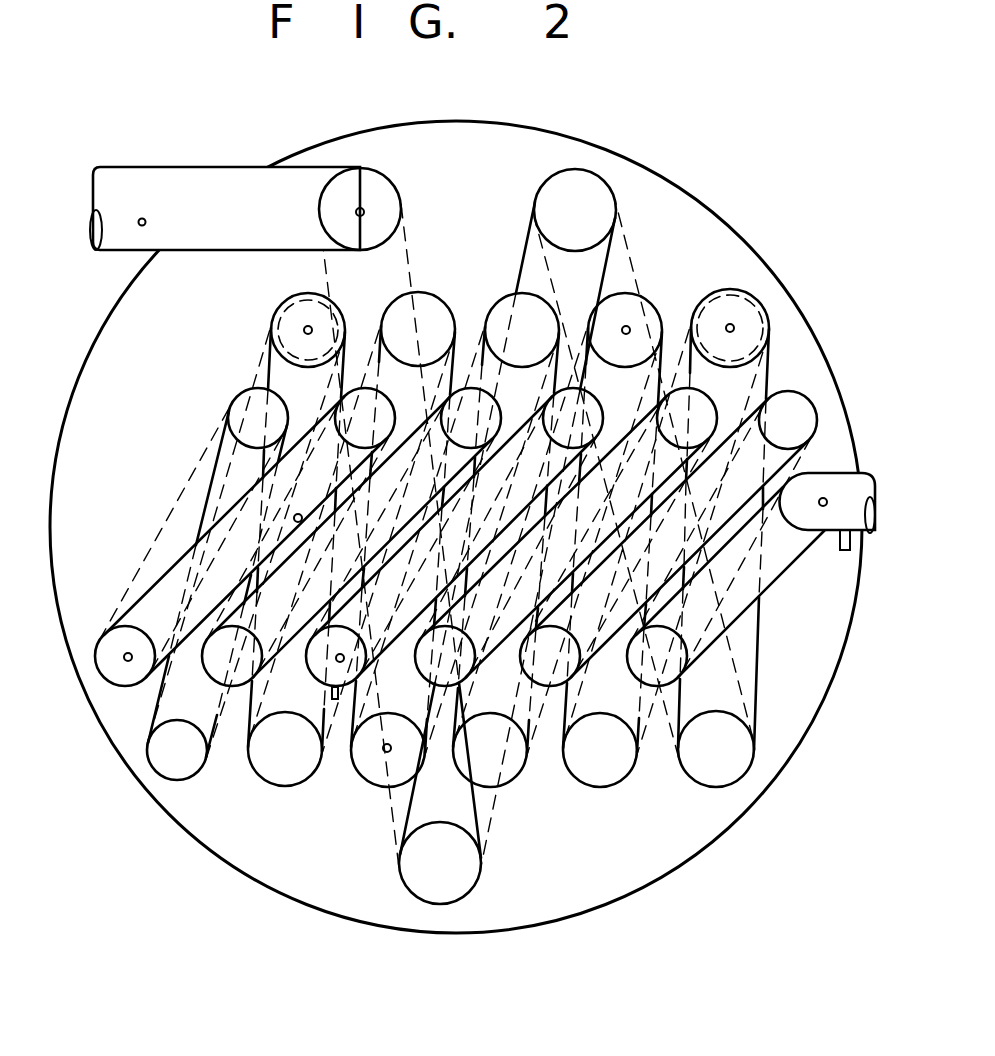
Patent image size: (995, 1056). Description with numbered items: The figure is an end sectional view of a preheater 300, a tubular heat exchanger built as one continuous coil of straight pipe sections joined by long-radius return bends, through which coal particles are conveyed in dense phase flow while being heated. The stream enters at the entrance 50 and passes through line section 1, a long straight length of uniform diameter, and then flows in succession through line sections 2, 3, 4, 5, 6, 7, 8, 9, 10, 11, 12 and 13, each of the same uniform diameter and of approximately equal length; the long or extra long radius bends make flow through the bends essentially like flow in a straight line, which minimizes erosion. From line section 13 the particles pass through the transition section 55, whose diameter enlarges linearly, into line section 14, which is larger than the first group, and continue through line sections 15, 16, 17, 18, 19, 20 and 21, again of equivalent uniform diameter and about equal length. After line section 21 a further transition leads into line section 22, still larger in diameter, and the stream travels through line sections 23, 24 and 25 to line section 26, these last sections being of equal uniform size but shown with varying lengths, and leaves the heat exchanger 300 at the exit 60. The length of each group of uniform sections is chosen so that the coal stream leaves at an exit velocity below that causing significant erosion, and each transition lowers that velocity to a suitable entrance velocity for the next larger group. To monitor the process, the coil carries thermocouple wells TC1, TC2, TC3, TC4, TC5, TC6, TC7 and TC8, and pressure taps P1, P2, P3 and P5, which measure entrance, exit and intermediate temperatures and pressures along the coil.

The line section 1 is at (657, 656).
The line section 2 is at (788, 420).
The line section 3 is at (550, 656).
The line section 4 is at (687, 418).
The line section 5 is at (445, 656).
The line section 6 is at (573, 418).
The line section 7 is at (336, 656).
The line section 8 is at (471, 418).
The line section 9 is at (232, 656).
The line section 10 is at (365, 418).
The line section 11 is at (125, 656).
The line section 12 is at (258, 418).
The line section 13 is at (177, 750).
The line section 14 is at (308, 330).
The line section 15 is at (285, 749).
The line section 16 is at (417, 329).
The line section 17 is at (388, 750).
The line section 18 is at (522, 330).
The line section 19 is at (490, 750).
The line section 20 is at (625, 330).
The line section 21 is at (600, 750).
The line section 22 is at (730, 328).
The line section 23 is at (716, 749).
The line section 24 is at (575, 210).
The line section 25 is at (440, 863).
The line section 26 is at (360, 209).
The entrance 50 is at (850, 503).
The transition section 55 is at (284, 308).
The exit 60 is at (93, 197).
The preheater 300 is at (456, 527).
The thermocouple well TC1 is at (823, 498).
The thermocouple well TC2 is at (336, 661).
The thermocouple well TC3 is at (128, 661).
The thermocouple well TC4 is at (312, 327).
The thermocouple well TC5 is at (383, 751).
The thermocouple well TC6 is at (629, 327).
The thermocouple well TC7 is at (734, 327).
The thermocouple 8 TC8 is at (364, 212).
The pressure tap P1 is at (850, 543).
The pressure tap P2 is at (335, 699).
The pressure tap P3 is at (299, 514).
The pressure tap P5 is at (145, 221).